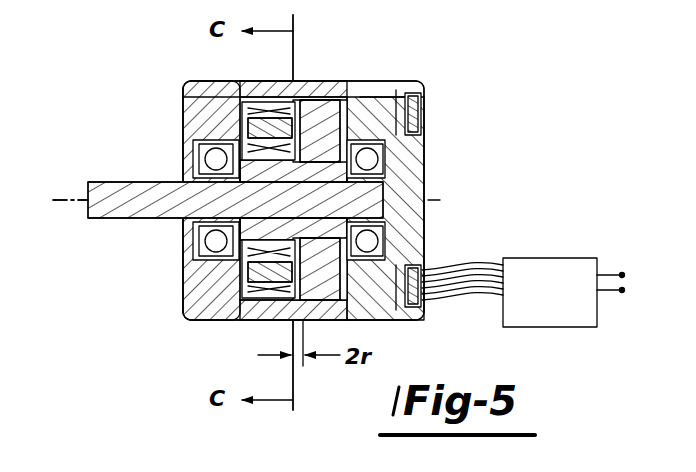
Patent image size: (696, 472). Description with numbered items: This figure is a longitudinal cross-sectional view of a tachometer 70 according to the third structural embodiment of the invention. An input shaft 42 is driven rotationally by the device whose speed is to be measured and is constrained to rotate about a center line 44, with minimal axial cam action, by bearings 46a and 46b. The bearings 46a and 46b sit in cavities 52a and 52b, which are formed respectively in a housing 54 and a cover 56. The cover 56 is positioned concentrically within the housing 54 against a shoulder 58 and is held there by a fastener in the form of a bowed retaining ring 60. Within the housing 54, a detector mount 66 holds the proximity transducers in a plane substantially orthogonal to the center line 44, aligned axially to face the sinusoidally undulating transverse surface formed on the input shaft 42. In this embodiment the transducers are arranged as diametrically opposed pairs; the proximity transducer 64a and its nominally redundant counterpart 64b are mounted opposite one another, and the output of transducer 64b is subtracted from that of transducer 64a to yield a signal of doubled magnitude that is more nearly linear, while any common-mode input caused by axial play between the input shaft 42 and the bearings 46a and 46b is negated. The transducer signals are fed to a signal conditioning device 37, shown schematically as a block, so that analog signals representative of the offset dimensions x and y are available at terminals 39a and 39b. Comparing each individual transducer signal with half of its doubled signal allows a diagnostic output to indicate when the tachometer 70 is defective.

The signal conditioning device 37 is at (532, 258).
The terminal 39a is at (622, 273).
The terminal 39b is at (622, 292).
The input shaft 42 is at (130, 218).
The center line 44 is at (66, 201).
The bearing 46a is at (205, 160).
The bearing 46b is at (385, 160).
The cavity 52a is at (198, 258).
The cavity 52b is at (400, 236).
The housing 54 is at (327, 84).
The cover 56 is at (424, 196).
The shoulder 58 is at (358, 92).
The bowed retaining ring 60 is at (424, 112).
The proximity transducer 64a is at (218, 118).
The proximity transducer 64b is at (228, 262).
The detector mount 66 is at (283, 102).
The tachometer 70 is at (665, 135).